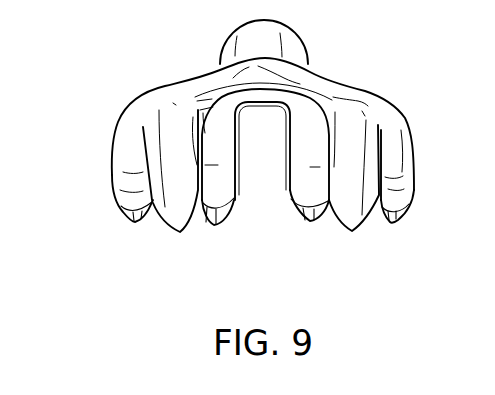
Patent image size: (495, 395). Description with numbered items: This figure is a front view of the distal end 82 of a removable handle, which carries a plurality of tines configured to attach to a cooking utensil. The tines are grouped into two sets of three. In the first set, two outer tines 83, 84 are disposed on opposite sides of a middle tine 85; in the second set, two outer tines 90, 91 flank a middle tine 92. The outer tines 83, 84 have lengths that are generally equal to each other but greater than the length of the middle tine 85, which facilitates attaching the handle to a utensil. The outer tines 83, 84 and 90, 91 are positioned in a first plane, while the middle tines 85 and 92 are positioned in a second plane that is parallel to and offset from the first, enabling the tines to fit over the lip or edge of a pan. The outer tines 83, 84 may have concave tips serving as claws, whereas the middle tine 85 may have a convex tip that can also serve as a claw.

The distal end 82 is at (333, 78).
The outer tine 83 is at (400, 213).
The outer tine 84 is at (296, 206).
The middle tine 85 is at (348, 234).
The outer tine 90 is at (112, 163).
The outer tine 91 is at (237, 181).
The middle tine 92 is at (170, 230).